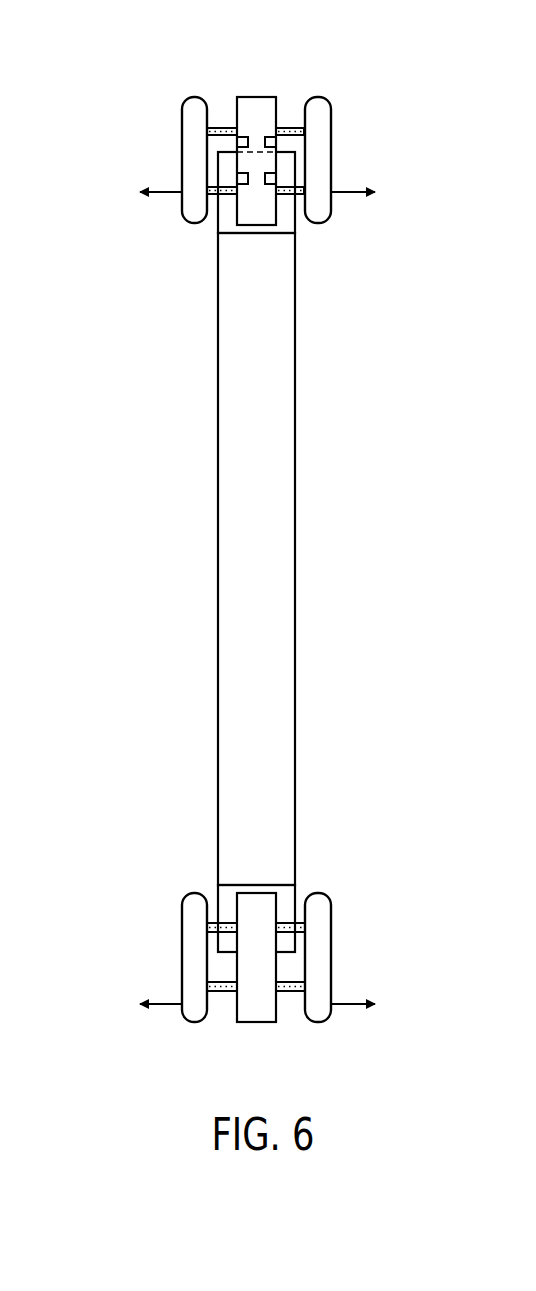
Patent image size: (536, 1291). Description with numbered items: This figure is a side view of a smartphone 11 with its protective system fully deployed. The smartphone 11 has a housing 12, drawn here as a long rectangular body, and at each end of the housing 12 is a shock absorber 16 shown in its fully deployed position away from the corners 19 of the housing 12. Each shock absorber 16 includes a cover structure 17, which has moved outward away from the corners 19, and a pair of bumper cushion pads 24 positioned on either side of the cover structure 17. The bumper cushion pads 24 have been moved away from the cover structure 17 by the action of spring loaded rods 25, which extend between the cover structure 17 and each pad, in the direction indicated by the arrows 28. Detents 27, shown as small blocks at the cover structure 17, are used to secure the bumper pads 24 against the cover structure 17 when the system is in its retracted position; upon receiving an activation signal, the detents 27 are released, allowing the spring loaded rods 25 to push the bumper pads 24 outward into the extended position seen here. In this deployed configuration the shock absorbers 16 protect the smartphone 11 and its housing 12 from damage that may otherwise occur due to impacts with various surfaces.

The smartphone 11 is at (150, 485).
The housing 12 is at (283, 563).
The shock absorbers 16 is at (251, 70).
The cover structure 17 is at (248, 110).
The corners 19 is at (304, 235).
The bumper cushion pads 24 is at (192, 150).
The spring loaded rods 25 is at (228, 128).
The detents 27 is at (245, 138).
The arrows 28 is at (157, 197).